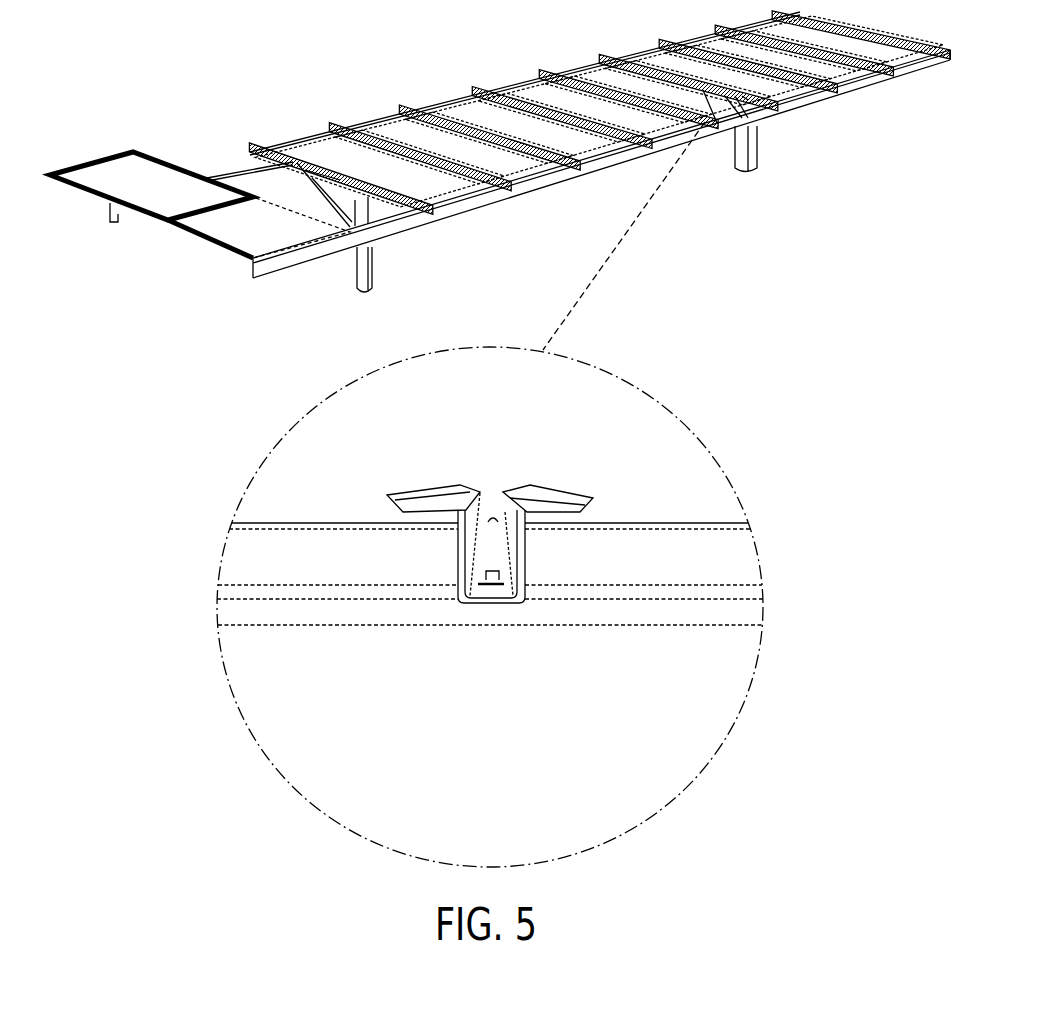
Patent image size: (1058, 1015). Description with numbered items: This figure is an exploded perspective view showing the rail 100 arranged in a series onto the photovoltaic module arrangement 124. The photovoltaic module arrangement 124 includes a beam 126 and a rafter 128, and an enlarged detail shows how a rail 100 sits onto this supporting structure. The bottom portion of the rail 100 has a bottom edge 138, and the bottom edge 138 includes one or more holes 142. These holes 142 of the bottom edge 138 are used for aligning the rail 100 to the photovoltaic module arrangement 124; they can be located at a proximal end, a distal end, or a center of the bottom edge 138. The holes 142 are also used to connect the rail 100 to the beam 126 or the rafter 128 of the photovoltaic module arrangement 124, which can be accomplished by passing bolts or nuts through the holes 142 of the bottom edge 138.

The rail 100 is at (262, 136).
The photovoltaic module arrangement 124 is at (340, 93).
The beam 126 is at (475, 200).
The rafter 128 is at (792, 90).
The bottom edge 138 is at (498, 605).
The holes 142 is at (488, 585).